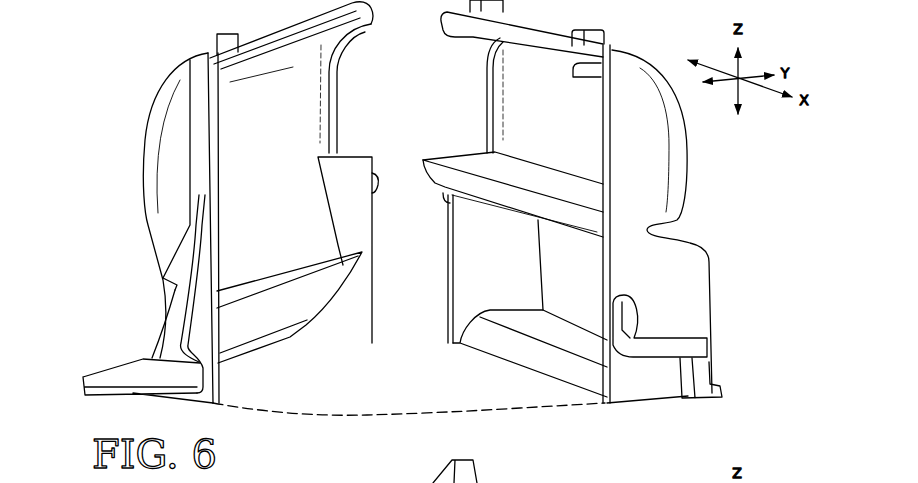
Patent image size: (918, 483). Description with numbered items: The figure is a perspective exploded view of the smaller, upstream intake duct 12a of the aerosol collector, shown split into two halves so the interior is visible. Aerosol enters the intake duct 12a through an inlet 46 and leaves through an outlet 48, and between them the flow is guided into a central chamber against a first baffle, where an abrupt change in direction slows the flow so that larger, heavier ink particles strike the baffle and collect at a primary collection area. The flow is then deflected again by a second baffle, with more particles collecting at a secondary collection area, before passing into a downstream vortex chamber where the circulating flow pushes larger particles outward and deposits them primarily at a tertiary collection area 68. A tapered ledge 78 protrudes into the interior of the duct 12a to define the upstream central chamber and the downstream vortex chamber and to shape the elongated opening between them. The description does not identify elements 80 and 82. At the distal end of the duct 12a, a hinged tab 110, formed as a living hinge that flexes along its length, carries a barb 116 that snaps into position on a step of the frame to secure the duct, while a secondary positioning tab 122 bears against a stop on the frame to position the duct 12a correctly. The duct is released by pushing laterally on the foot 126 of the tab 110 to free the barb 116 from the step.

The intake duct 12a is at (106, 179).
The inlet 46 is at (515, 392).
The outlet 48 is at (470, 73).
The tertiary collection area 68 is at (500, 175).
The tapered ledge 78 is at (553, 173).
The step 80 is at (520, 318).
The side block 82 is at (316, 250).
The hinged tab 110 is at (162, 338).
The barb 116 is at (160, 278).
The secondary positioning tab 122 is at (630, 312).
The foot 126 is at (100, 377).